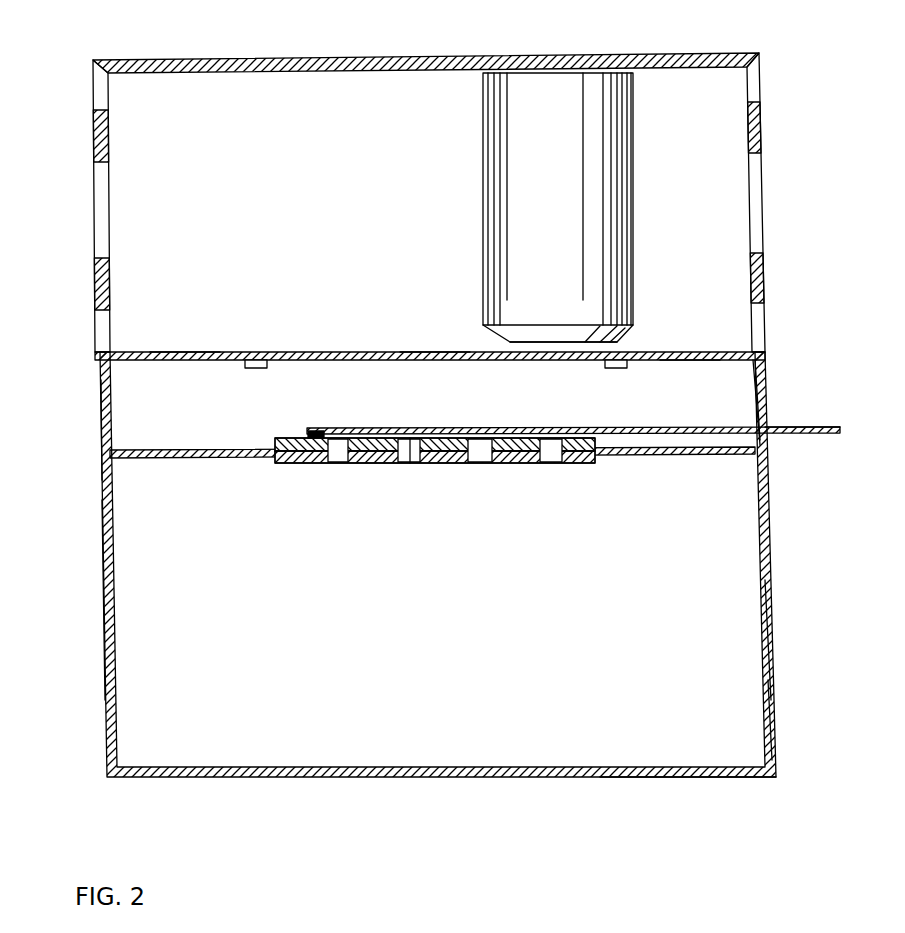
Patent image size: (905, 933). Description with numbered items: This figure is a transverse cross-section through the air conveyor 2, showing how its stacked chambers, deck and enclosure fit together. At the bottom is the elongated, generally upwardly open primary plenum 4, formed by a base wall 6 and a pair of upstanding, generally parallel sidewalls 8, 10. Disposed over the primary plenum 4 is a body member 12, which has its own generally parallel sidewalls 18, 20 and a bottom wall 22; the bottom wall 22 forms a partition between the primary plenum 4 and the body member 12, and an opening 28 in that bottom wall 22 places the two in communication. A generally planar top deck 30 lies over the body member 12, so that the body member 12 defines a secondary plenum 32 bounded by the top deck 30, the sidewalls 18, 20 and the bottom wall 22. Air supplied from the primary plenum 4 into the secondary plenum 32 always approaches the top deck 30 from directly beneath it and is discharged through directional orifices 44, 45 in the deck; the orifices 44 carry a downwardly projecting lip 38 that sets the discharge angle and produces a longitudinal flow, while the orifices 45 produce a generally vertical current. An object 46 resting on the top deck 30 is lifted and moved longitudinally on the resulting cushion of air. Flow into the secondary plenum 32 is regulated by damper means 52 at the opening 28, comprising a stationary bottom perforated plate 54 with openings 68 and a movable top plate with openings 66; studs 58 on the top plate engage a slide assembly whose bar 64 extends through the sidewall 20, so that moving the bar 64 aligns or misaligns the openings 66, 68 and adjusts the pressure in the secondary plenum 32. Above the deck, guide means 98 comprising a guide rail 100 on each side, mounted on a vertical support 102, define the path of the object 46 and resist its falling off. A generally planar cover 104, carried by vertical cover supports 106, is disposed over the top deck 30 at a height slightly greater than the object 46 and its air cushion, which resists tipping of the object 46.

The air conveyor 2 is at (770, 560).
The primary plenum 4 is at (745, 718).
The base wall 6 is at (690, 777).
The sidewall 8 is at (103, 606).
The sidewall 10 is at (773, 635).
The body member 12 is at (768, 400).
The sidewall 18 is at (97, 426).
The sidewall 20 is at (768, 418).
The bottom wall 22 is at (185, 458).
The opening 28 is at (298, 463).
The top deck 30 is at (672, 352).
The secondary plenum 32 is at (732, 392).
The lip 38 is at (257, 368).
The directional orifice 44 is at (617, 346).
The directional orifice 45 is at (185, 352).
The object 46 is at (633, 160).
The damper means 52 is at (483, 460).
The bottom perforated plate 54 is at (565, 463).
The stud 58 is at (320, 434).
The bar 64 is at (793, 434).
The opening 66 is at (410, 438).
The opening 68 is at (410, 455).
The guide means 98 is at (762, 135).
The guide rail 100 is at (95, 140).
The vertical support 102 is at (96, 331).
The cover 104 is at (612, 53).
The vertical cover support 106 is at (762, 92).